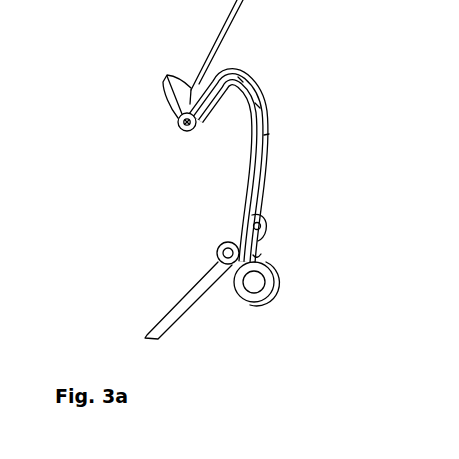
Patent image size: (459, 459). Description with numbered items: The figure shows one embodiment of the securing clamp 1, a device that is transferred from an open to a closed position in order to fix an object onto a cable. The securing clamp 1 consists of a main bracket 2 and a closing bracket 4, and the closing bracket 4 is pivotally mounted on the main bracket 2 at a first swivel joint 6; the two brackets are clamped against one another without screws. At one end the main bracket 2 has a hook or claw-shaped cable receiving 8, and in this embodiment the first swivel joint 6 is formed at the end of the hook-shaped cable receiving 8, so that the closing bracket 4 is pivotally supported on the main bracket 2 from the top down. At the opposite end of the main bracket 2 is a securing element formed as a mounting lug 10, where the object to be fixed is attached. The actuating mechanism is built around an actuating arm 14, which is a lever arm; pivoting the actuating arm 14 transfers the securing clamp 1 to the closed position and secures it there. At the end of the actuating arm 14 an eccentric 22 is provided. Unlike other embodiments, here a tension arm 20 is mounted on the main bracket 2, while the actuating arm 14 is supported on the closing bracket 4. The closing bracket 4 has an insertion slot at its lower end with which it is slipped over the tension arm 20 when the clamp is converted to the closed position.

The securing clamp 1 is at (296, 80).
The main bracket 2 is at (264, 160).
The closing bracket 4 is at (205, 58).
The first swivel joint 6 is at (178, 121).
The cable receiving 8 is at (217, 123).
The mounting lug 10 is at (250, 284).
The actuating arm 14 is at (173, 303).
The tension arm 20 is at (258, 230).
The eccentric 22 is at (238, 240).